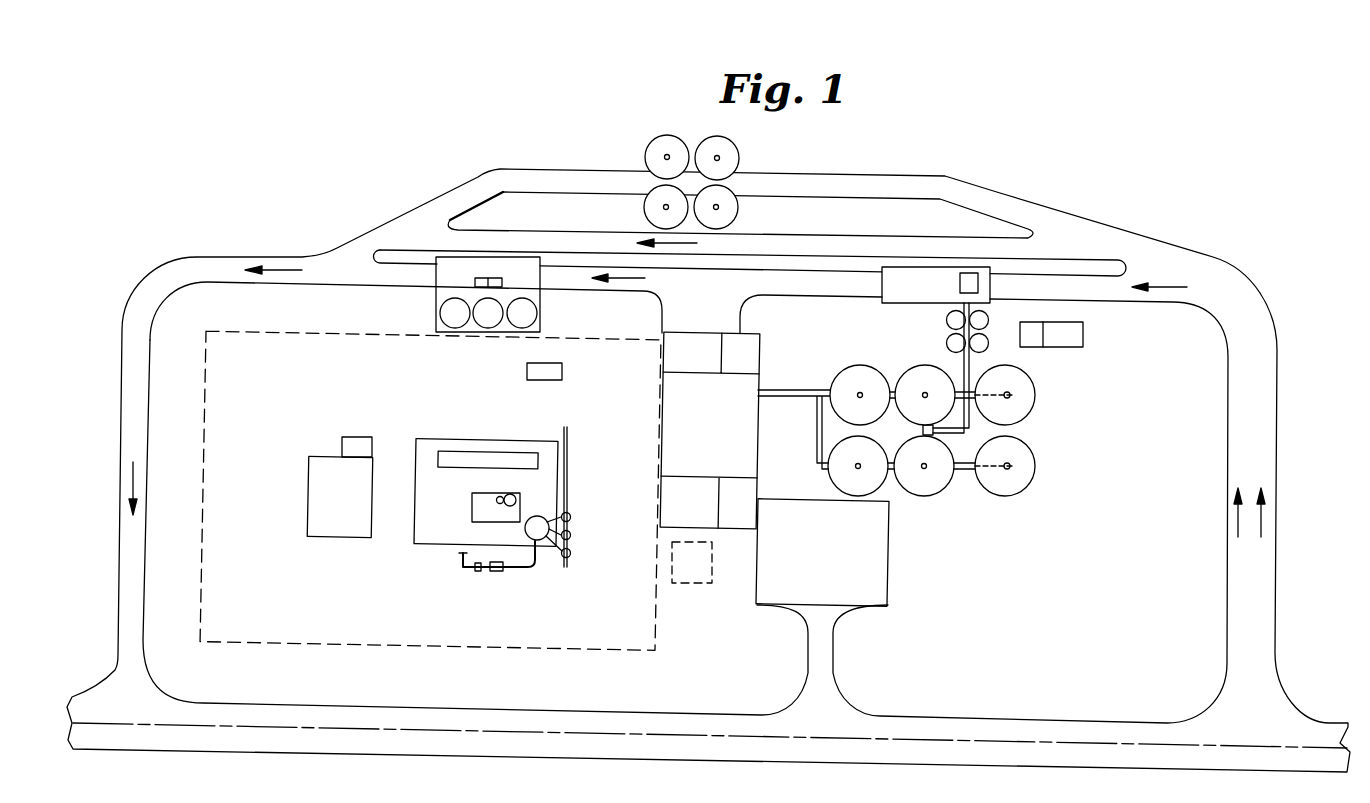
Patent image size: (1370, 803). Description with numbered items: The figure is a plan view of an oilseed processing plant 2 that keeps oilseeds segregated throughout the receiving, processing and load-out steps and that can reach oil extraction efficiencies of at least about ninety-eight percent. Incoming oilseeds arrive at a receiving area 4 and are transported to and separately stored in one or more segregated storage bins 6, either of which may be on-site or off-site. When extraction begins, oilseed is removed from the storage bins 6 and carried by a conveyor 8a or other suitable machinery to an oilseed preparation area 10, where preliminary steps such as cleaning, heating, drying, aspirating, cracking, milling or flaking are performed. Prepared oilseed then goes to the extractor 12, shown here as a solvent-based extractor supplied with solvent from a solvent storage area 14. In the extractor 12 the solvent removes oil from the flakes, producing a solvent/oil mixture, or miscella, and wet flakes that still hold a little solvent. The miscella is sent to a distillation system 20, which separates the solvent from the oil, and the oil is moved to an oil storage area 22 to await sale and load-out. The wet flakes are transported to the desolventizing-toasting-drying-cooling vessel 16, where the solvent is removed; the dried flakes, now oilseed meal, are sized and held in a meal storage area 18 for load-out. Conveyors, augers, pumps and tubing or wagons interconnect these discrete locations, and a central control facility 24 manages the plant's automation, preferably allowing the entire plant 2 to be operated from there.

The oilseed processing plant 2 is at (206, 221).
The receiving area 4 is at (948, 278).
The segregated storage bins 6 is at (881, 367).
The conveyor 8a is at (797, 389).
The oilseed preparation area 10 is at (732, 396).
The extractor 12 is at (463, 458).
The solvent storage area 14 is at (322, 467).
The desolventizing-toasting-drying-cooling vessel (DTDC) 16 is at (539, 540).
The meal storage area 18 is at (651, 208).
The distillation system 20 is at (473, 510).
The oil storage area 22 is at (462, 296).
The central control facility 24 is at (709, 518).